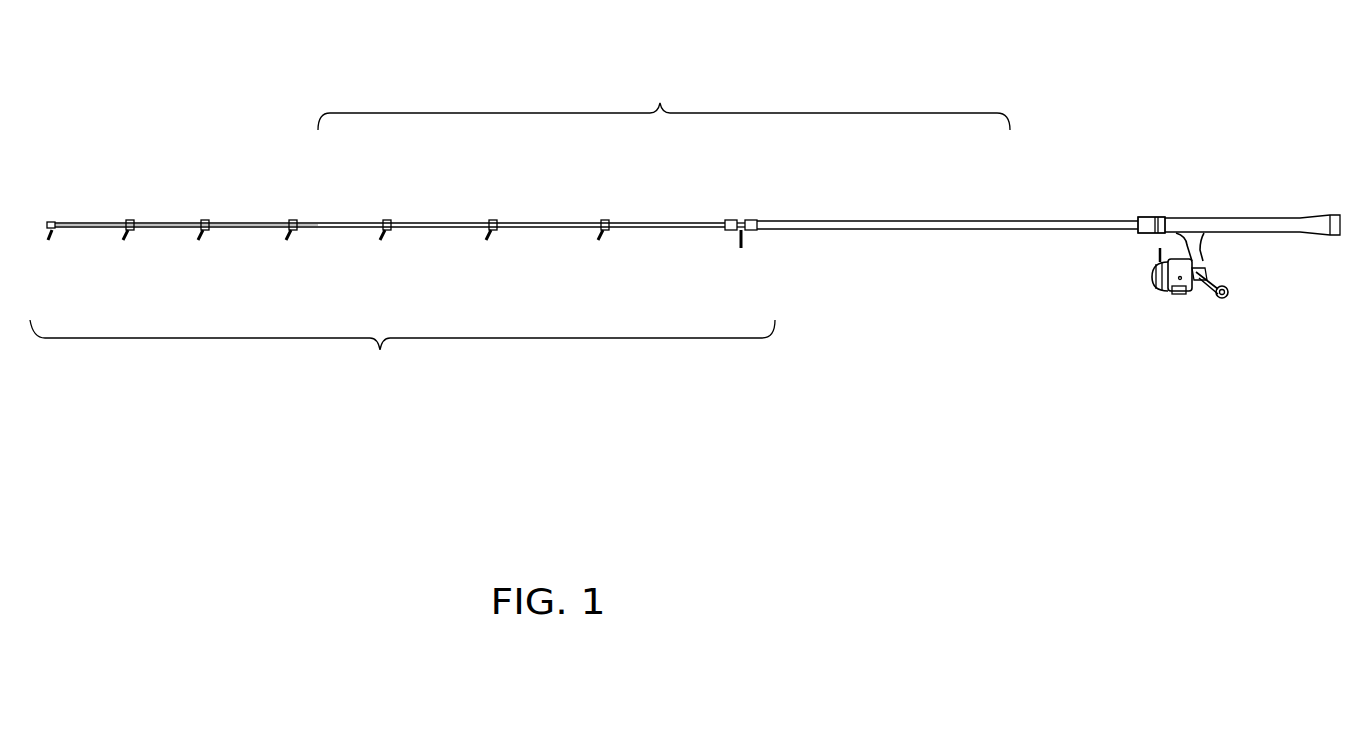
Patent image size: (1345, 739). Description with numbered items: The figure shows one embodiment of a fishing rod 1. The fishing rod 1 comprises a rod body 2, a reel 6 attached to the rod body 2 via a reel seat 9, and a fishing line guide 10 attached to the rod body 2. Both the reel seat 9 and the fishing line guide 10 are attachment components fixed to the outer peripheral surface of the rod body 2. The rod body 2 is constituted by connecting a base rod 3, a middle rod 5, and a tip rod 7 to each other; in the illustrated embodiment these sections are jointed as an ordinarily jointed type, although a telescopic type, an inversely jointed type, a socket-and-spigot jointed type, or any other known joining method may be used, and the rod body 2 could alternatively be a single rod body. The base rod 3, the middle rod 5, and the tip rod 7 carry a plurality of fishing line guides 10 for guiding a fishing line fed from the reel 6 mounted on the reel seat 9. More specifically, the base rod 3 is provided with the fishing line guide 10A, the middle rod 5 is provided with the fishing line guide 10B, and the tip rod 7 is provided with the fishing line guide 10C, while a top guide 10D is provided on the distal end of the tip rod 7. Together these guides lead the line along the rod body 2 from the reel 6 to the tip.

The fishing rod 1 is at (1084, 112).
The rod body 2 is at (660, 104).
The base rod 3 is at (996, 221).
The middle rod 5 is at (547, 222).
The reel 6 is at (1175, 296).
The tip rod 7 is at (337, 222).
The reel seat 9 is at (1164, 242).
The fishing line guide 10 is at (402, 303).
The fishing line guide 10A is at (741, 253).
The fishing line guide 10B is at (378, 240).
The fishing line guide 10C is at (283, 240).
The top guide 10D is at (52, 238).